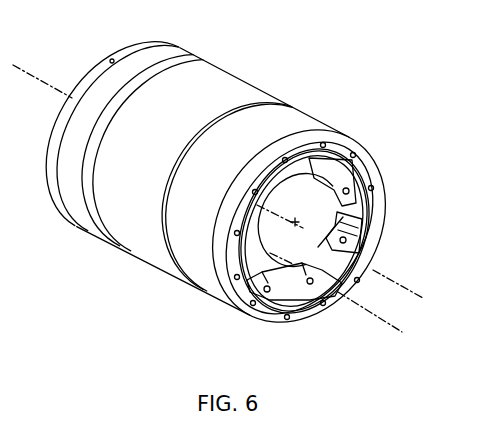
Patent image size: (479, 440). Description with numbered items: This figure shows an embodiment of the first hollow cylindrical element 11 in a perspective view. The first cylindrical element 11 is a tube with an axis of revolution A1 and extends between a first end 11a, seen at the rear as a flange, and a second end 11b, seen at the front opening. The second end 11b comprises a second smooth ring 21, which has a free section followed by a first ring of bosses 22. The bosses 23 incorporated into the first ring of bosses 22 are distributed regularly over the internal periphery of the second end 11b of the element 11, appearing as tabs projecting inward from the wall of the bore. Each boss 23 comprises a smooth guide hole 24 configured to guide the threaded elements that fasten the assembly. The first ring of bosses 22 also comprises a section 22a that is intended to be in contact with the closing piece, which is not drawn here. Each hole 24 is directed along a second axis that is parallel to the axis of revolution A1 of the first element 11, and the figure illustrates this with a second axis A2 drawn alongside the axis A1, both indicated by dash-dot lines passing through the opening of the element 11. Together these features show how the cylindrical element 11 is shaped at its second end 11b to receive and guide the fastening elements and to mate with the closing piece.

The first hollow cylindrical element 11 is at (257, 83).
The first end 11a is at (91, 68).
The second end 11b is at (341, 212).
The second smooth ring 21 is at (373, 187).
The first ring of bosses 22 is at (384, 204).
The section 22a is at (370, 233).
The bosses 23 is at (280, 315).
The smooth guide hole 24 is at (340, 290).
The axis of revolution A1 is at (426, 291).
The second axis A2 is at (395, 335).